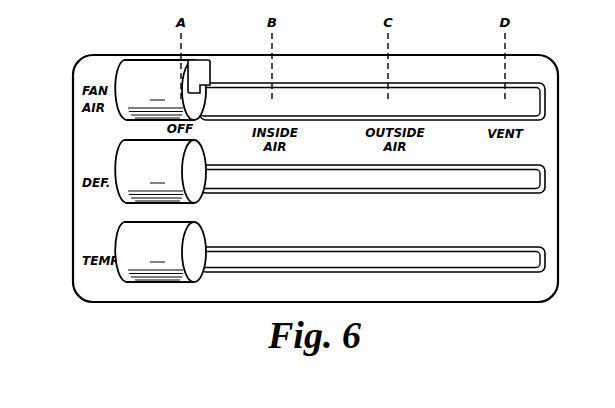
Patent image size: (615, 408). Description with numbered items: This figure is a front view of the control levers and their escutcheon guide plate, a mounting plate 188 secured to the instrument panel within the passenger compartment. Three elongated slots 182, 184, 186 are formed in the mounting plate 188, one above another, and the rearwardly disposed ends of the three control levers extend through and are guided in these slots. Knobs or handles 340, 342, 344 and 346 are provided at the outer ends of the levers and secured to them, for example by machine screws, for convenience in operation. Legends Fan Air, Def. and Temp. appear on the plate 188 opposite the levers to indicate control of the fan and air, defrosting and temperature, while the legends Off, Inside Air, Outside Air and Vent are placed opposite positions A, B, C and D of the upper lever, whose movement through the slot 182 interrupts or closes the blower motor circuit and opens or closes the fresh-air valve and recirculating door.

The mounting plate 188 is at (82, 143).
The elongated slot 182 is at (533, 100).
The elongated slot 184 is at (535, 176).
The elongated slot 186 is at (505, 265).
The knob 340 is at (133, 75).
The knob 342 is at (122, 192).
The knob 344 is at (160, 270).
The knob 346 is at (207, 72).